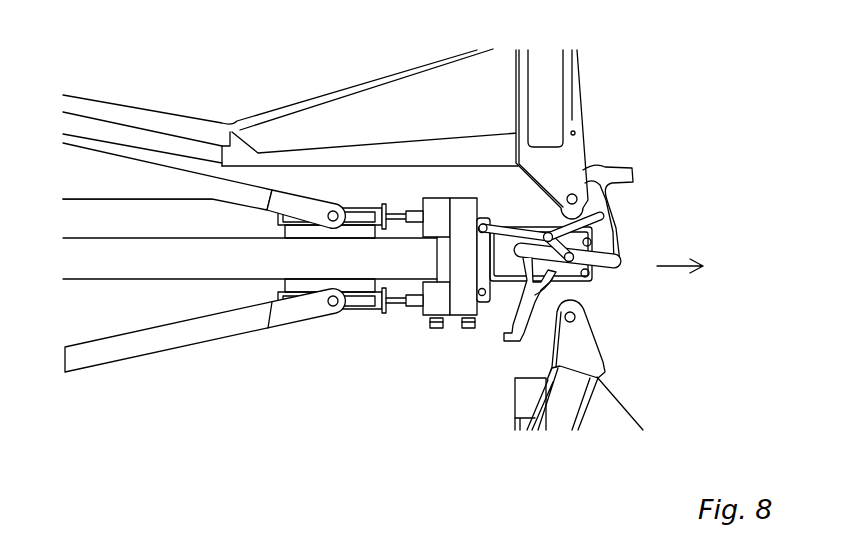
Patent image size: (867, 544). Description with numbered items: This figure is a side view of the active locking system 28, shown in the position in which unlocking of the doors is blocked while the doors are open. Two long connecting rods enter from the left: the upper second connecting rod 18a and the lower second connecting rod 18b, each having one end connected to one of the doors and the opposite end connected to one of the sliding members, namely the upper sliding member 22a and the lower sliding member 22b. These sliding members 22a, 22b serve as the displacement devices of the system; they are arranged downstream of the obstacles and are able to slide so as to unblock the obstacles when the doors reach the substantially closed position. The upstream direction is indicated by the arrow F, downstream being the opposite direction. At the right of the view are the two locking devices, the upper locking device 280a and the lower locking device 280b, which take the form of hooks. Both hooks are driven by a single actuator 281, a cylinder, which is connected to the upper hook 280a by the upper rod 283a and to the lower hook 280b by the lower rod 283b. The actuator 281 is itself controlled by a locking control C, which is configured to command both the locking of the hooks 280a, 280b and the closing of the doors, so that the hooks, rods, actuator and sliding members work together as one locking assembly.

The upper second connecting rod 18a is at (237, 197).
The lower second connecting rod 18b is at (163, 342).
The upper sliding member 22a is at (363, 200).
The lower sliding member 22b is at (364, 300).
The active locking system 28 is at (718, 214).
The upper locking device 280a is at (580, 163).
The lower locking device 280b is at (580, 345).
The actuator 281 is at (512, 233).
The upper rod 283a is at (620, 233).
The lower rod 283b is at (520, 283).
The locking control C is at (463, 306).
The arrow representing upstream F is at (675, 262).